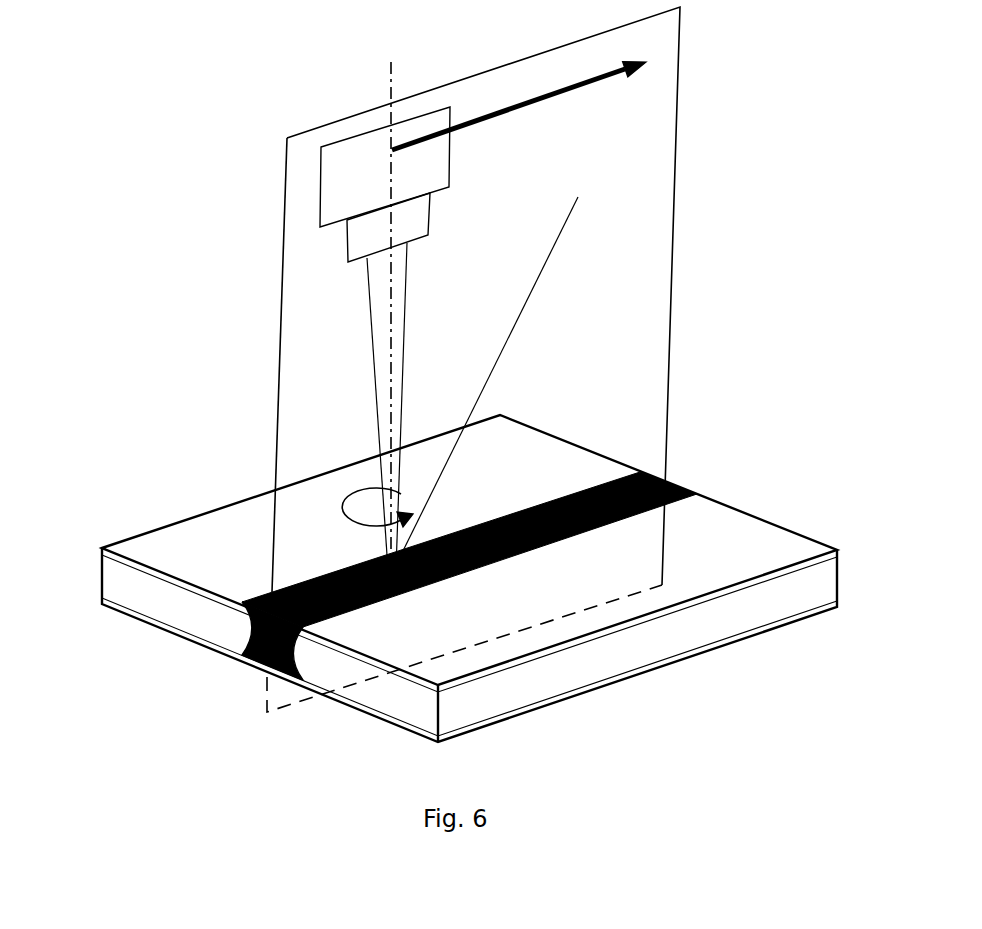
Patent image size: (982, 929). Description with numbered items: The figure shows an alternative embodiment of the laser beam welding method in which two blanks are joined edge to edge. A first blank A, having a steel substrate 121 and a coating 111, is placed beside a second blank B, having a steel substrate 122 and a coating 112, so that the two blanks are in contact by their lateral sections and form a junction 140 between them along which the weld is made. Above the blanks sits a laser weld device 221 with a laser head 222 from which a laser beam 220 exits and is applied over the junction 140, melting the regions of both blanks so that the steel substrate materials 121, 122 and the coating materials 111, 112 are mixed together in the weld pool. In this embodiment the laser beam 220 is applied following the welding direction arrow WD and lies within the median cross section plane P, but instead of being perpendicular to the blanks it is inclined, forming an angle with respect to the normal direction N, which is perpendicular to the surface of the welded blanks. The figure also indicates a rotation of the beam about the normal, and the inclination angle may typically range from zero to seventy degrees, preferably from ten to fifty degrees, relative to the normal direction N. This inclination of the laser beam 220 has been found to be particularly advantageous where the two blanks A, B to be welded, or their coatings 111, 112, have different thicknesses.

The coating 111 is at (222, 600).
The coating 112 is at (790, 573).
The steel substrate 121 is at (128, 592).
The steel substrate 122 is at (548, 675).
The junction between both blanks 140 is at (272, 653).
The laser beam 220 is at (380, 342).
The laser weld device 221 is at (317, 188).
The laser head 222 is at (347, 238).
The median cross section plane P is at (677, 187).
The normal direction N is at (394, 299).
The welding direction arrow WD is at (519, 106).
The first blank A is at (167, 604).
The second blank B is at (360, 682).